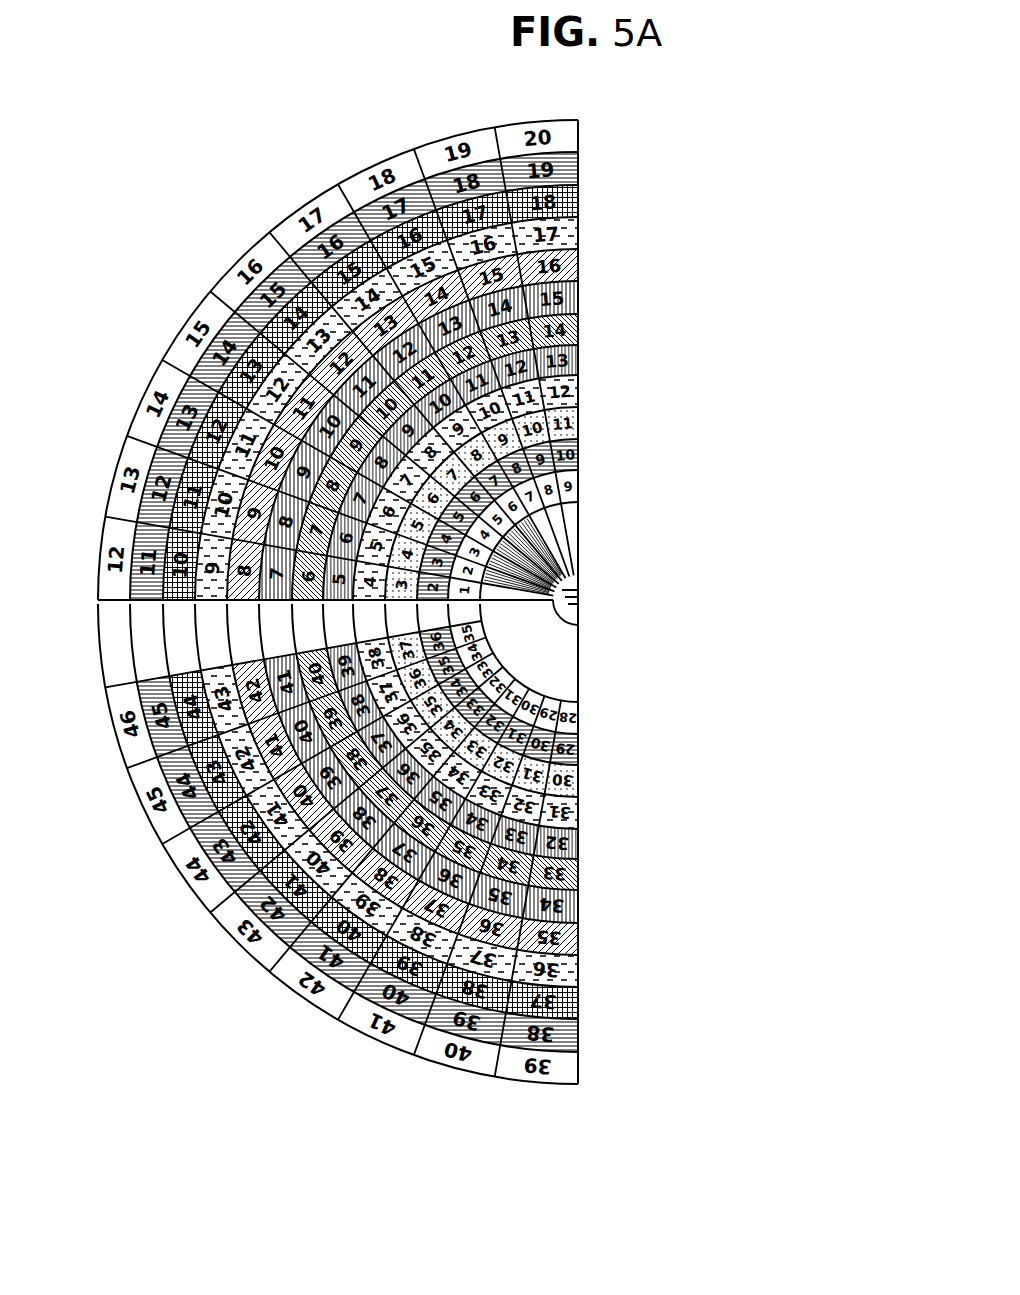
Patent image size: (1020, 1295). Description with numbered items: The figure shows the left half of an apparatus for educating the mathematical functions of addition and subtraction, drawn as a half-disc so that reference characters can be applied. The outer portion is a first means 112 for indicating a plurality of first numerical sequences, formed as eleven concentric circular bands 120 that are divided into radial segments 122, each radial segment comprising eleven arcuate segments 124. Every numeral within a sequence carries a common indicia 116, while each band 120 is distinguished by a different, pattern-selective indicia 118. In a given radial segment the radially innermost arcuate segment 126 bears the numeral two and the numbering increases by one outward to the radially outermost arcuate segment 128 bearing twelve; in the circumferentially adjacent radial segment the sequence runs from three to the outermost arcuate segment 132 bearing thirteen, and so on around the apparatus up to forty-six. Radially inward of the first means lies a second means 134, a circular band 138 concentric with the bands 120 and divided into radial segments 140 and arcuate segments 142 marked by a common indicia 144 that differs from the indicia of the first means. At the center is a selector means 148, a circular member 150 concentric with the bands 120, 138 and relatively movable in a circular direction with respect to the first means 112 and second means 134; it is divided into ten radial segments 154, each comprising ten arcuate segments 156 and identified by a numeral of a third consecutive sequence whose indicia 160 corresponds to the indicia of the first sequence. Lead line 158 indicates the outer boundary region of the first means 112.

The first means 112 is at (668, 196).
The common indicia 116 is at (548, 1084).
The different indicia 118 is at (583, 1027).
The circular bands 120 is at (250, 953).
The radial segments 122 is at (222, 930).
The arcuate segments 124 is at (312, 1002).
The radially innermost arcuate segment 126 is at (582, 442).
The radially outermost arcuate segment 128 is at (95, 548).
The radially outermost arcuate segment 132 is at (122, 450).
The second means 134 is at (581, 471).
The circular band 138 is at (583, 486).
The radial segments 140 is at (583, 495).
The arcuate segments 142 is at (585, 709).
The common indicia 144 is at (583, 724).
The selector means 148 is at (581, 518).
The circular member 150 is at (581, 543).
The radial segments 154 is at (581, 565).
The arcuate segments 156 is at (500, 602).
The lower outer ring 158 is at (100, 654).
The indicia 160 is at (543, 602).